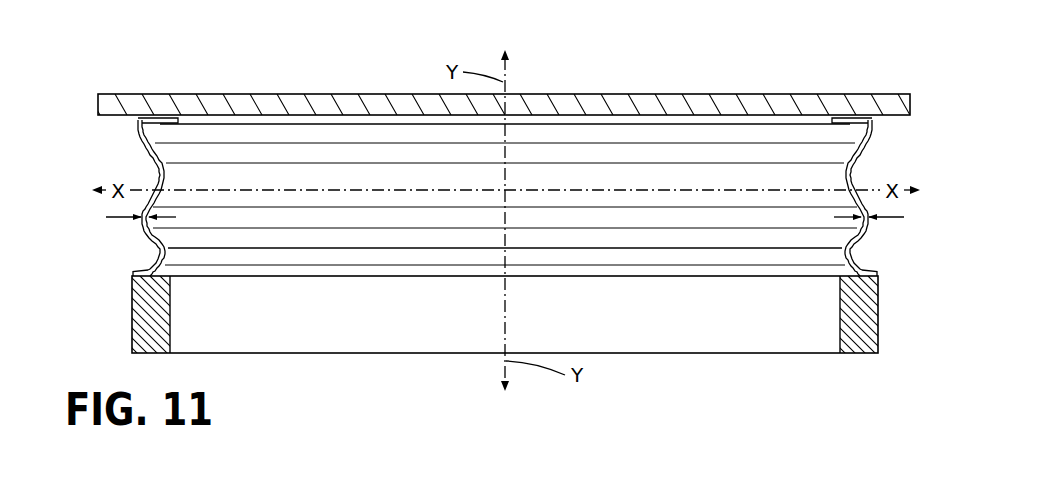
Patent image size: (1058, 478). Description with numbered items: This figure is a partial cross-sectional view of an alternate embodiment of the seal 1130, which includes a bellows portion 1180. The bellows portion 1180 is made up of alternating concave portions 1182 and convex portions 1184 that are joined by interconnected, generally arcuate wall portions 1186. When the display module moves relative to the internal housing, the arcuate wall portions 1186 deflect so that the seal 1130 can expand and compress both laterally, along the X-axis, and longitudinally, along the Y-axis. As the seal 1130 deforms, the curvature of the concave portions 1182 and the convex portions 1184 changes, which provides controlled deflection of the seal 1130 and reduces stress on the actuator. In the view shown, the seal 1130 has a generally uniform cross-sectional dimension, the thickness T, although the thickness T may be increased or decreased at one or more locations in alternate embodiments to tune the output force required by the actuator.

The seal 1130 is at (148, 250).
The bellows portion 1180 is at (858, 174).
The concave portions 1182 is at (855, 263).
The convex portions 1184 is at (868, 120).
The arcuate wall portions 1186 is at (138, 131).
The thickness T is at (113, 219).